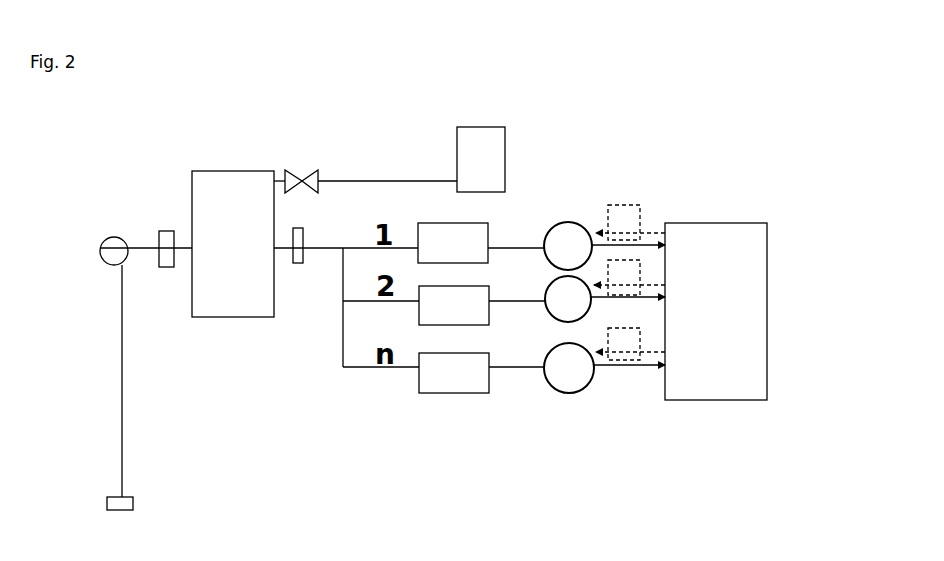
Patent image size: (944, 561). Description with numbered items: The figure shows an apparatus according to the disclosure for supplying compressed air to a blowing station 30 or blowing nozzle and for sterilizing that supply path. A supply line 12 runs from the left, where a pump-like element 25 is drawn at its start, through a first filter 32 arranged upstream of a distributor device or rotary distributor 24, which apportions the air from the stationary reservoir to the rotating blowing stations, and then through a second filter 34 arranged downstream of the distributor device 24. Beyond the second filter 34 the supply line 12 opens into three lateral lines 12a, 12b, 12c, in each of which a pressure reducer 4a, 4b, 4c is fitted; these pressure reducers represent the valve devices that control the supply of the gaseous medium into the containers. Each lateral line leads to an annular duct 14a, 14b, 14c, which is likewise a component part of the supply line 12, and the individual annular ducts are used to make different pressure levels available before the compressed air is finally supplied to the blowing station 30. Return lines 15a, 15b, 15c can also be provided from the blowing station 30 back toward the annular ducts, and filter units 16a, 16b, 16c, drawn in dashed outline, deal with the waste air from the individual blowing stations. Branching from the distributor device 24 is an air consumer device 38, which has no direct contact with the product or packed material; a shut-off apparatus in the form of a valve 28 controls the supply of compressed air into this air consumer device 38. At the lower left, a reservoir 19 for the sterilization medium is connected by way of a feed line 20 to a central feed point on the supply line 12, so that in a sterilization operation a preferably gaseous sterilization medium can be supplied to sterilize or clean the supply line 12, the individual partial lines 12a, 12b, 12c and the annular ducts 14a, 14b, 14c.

The supply line 12 is at (140, 248).
The lateral line 12a is at (518, 225).
The lateral line 12b is at (503, 300).
The lateral line 12c is at (503, 368).
The annular duct 14a is at (567, 222).
The annular duct 14b is at (548, 319).
The annular duct 14c is at (575, 393).
The return line 15a is at (643, 232).
The return line 15b is at (652, 282).
The return line 15c is at (652, 352).
The filter unit 16a is at (625, 205).
The filter unit 16b is at (632, 268).
The filter unit 16c is at (628, 338).
The reservoir for the sterilization medium 19 is at (122, 510).
The feed line 20 is at (122, 438).
The rotary distributor 24 is at (233, 244).
The pump 25 is at (110, 257).
The valve 28 is at (330, 175).
The blowing station 30 is at (716, 311).
The first filter 32 is at (168, 267).
The second filter 34 is at (298, 263).
The air consumer device 38 is at (488, 152).
The pressure reducer 4a is at (453, 243).
The pressure reducer 4b is at (454, 305).
The pressure reducer 4c is at (454, 373).